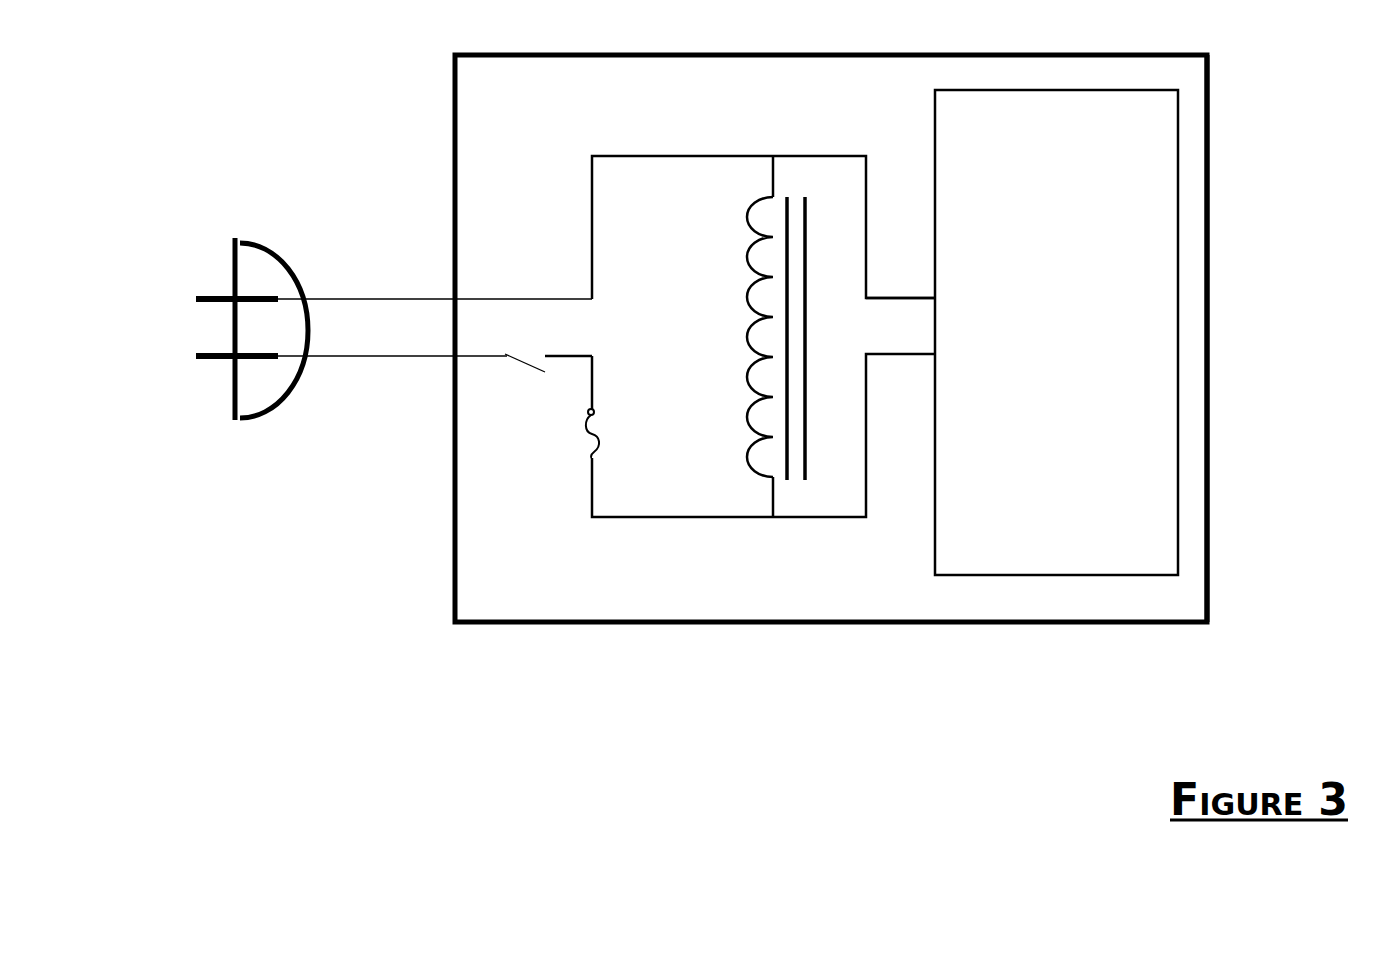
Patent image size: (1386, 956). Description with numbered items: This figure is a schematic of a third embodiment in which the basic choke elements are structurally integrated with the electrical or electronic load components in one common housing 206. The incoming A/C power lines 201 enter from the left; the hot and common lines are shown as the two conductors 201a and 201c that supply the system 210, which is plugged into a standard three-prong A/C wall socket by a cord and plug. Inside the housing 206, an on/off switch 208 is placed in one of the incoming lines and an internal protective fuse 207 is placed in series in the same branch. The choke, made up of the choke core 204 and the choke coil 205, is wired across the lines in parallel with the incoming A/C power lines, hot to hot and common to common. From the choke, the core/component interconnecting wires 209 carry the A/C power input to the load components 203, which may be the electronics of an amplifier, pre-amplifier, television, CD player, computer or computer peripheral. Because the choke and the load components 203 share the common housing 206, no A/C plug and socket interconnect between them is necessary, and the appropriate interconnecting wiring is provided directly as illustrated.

The A/C power wall socket 201 is at (168, 277).
The antenna lead 201a is at (361, 303).
The antenna lead 201c is at (318, 352).
The load components 203 is at (1085, 328).
The choke core 204 is at (865, 408).
The choke coil 205 is at (745, 305).
The housing 206 is at (1272, 432).
The fuse 207 is at (663, 481).
The on/off switch 208 is at (545, 408).
The core/component interconnecting wires 209 is at (900, 285).
The system 210 is at (518, 44).